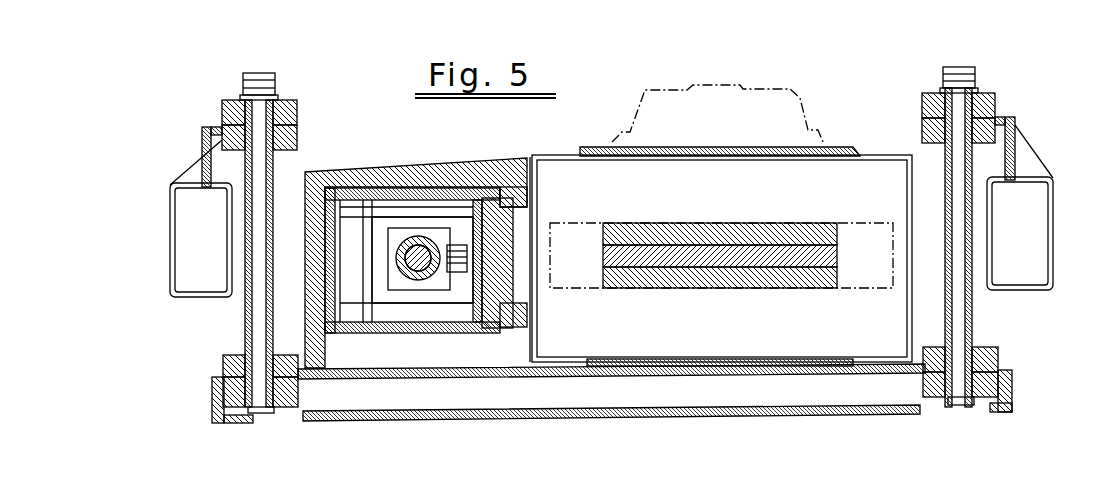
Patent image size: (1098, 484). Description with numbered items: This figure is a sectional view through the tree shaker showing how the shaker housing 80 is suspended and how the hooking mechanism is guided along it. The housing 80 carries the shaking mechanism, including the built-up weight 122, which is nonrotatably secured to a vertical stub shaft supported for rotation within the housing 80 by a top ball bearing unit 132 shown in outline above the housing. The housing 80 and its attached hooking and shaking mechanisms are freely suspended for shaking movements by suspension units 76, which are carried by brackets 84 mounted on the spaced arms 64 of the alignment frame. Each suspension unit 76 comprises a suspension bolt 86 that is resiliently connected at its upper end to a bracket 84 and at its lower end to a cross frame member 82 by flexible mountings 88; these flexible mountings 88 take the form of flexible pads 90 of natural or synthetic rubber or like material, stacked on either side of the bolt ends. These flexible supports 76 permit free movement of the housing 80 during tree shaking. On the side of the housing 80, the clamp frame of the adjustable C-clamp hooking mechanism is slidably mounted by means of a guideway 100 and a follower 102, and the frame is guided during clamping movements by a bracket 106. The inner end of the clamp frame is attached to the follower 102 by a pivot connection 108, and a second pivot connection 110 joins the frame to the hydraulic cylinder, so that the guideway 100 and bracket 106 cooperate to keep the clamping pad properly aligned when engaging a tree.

The spaced arms 64 is at (170, 281).
The suspension units 76 is at (999, 52).
The housing 80 is at (868, 150).
The cross frame members 82 is at (630, 415).
The brackets 84 is at (205, 128).
The suspension bolts 86 is at (260, 320).
The flexible mountings 88 is at (1006, 356).
The flexible pads 90 is at (223, 369).
The guideway 100 is at (510, 163).
The follower 102 is at (513, 237).
The bracket 106 is at (418, 232).
The pivot connection 108 is at (422, 170).
The second pivot connection 110 is at (352, 185).
The weight 122 is at (773, 223).
The ball bearing unit 132 is at (818, 86).